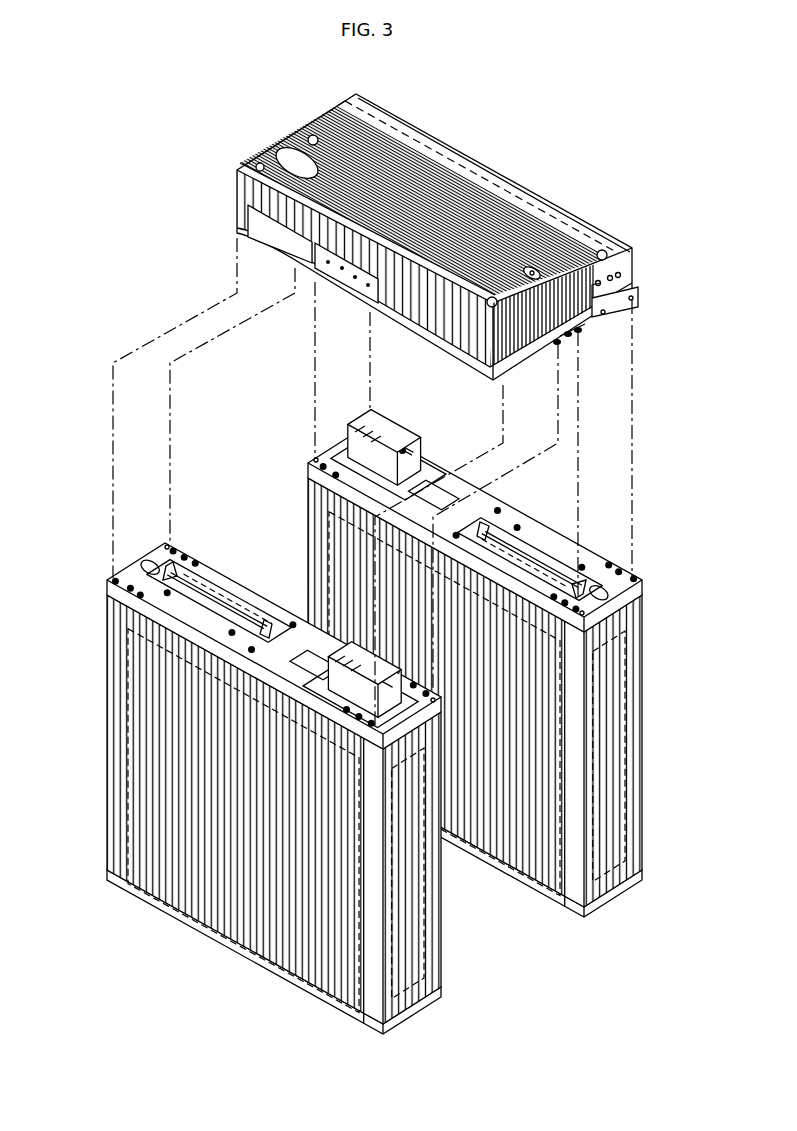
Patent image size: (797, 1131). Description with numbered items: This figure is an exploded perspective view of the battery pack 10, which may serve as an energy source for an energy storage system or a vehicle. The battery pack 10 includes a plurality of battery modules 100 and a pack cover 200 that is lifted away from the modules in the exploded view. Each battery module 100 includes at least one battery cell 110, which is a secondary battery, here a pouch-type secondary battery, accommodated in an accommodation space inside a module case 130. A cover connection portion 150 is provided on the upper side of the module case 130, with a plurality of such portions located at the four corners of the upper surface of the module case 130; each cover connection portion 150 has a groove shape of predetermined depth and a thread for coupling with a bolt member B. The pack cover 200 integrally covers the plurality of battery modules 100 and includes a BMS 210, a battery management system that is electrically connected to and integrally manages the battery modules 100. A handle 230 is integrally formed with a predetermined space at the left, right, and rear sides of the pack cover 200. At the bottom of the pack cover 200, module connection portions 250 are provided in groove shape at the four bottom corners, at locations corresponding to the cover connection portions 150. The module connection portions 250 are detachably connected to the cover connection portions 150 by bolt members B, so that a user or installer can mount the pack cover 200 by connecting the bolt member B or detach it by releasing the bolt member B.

The battery pack 10 is at (364, 579).
The battery module 100 is at (405, 743).
The battery cell 110 is at (625, 788).
The module case 130 is at (633, 705).
The cover connection portion 150 is at (600, 613).
The pack cover 200 is at (436, 245).
The BMS 210 is at (520, 192).
The handle 230 is at (535, 343).
The module connection portion 250 is at (581, 338).
The bolt member B is at (596, 318).